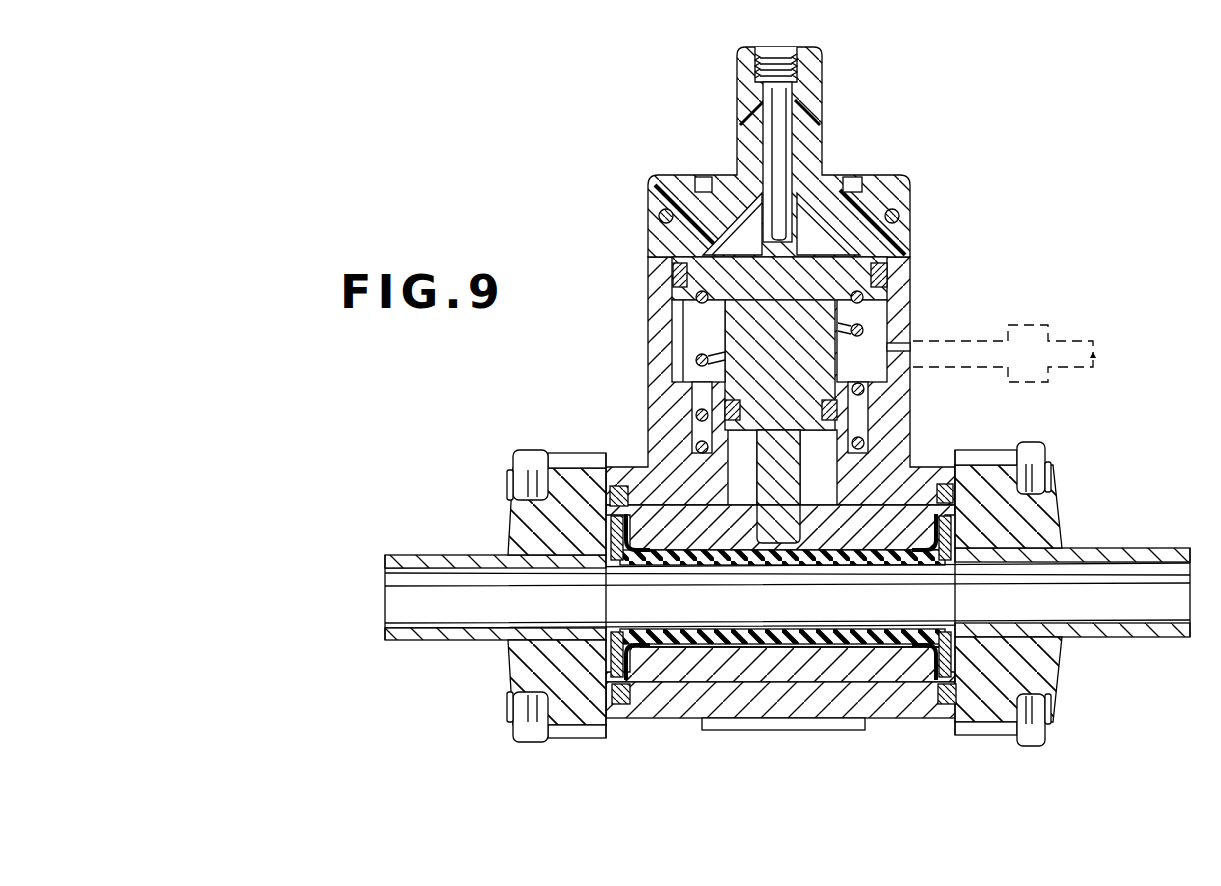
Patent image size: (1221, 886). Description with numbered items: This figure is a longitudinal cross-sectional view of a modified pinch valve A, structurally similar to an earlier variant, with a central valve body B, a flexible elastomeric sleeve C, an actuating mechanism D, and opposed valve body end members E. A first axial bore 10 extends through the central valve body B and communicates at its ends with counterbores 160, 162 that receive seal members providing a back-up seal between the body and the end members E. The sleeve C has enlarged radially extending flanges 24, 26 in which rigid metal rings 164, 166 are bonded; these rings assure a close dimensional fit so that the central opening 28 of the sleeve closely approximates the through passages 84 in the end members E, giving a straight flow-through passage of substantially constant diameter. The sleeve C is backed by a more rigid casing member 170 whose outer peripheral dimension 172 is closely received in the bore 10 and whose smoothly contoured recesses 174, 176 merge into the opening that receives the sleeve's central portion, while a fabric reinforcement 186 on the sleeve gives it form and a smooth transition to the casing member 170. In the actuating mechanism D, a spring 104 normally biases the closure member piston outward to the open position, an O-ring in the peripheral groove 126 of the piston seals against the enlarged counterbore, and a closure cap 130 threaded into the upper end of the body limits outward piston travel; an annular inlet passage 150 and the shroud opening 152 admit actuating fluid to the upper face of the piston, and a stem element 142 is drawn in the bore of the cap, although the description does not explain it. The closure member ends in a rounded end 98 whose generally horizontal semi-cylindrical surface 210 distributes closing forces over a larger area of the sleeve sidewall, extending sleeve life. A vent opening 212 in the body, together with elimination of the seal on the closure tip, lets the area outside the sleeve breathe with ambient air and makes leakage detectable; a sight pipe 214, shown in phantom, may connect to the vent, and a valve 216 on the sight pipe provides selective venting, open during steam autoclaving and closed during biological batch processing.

The first axial bore 10 is at (697, 512).
The sleeve flange 24 is at (630, 637).
The sleeve flange 26 is at (930, 563).
The central opening of the sleeve 28 is at (963, 583).
The through passage 84 is at (442, 570).
The rounded end of the closure member 98 is at (777, 512).
The spring 104 is at (886, 304).
The peripheral groove of the piston 126 is at (888, 262).
The closure cap 130 is at (890, 184).
The stem 142 is at (781, 118).
The annular inlet passage 150 is at (785, 47).
The shroud opening 152 is at (760, 144).
The counterbore 160 is at (613, 493).
The counterbore 162 is at (944, 510).
The rigid metal ring 164 is at (610, 553).
The rigid metal ring 166 is at (957, 646).
The casing member 170 is at (877, 668).
The outer peripheral dimension of the casing member 172 is at (707, 683).
The smoothly contoured recess 174 is at (627, 660).
The smoothly contoured recess 176 is at (946, 686).
The fabric reinforcement 186 is at (827, 649).
The semi-cylindrical surface 210 is at (769, 542).
The vent opening 212 is at (913, 341).
The sight pipe 214 is at (940, 368).
The valve 216 is at (1038, 383).
The pinch valve A is at (1062, 217).
The central valve body B is at (770, 690).
The flexible elastomeric sleeve C is at (830, 560).
The actuating mechanism D is at (712, 340).
The valve body end member E is at (490, 535).